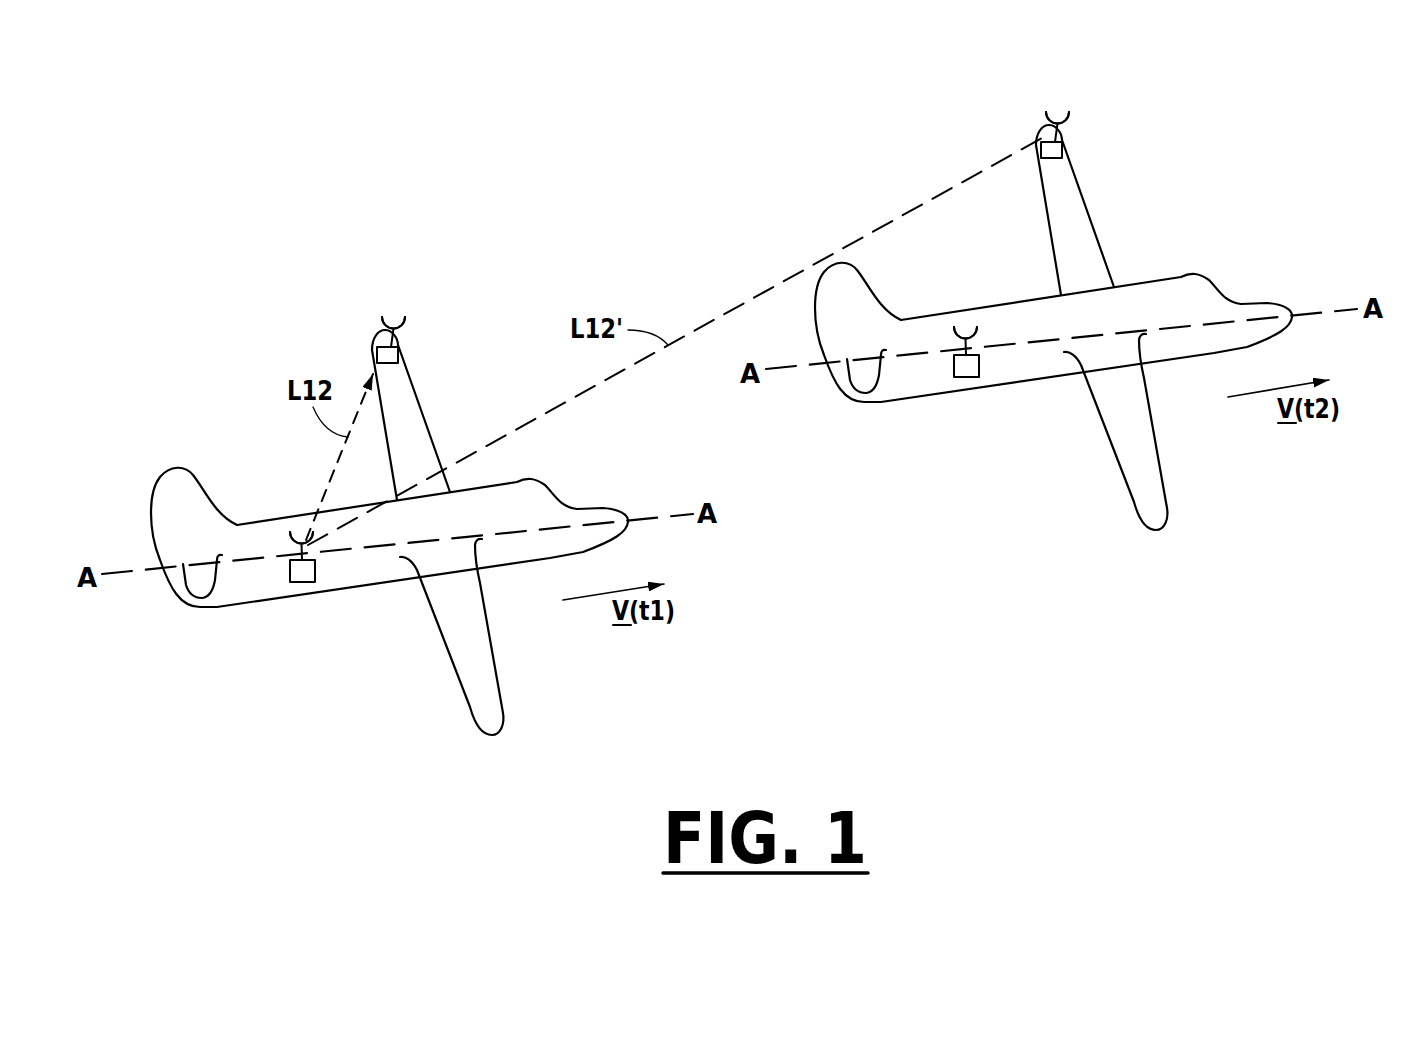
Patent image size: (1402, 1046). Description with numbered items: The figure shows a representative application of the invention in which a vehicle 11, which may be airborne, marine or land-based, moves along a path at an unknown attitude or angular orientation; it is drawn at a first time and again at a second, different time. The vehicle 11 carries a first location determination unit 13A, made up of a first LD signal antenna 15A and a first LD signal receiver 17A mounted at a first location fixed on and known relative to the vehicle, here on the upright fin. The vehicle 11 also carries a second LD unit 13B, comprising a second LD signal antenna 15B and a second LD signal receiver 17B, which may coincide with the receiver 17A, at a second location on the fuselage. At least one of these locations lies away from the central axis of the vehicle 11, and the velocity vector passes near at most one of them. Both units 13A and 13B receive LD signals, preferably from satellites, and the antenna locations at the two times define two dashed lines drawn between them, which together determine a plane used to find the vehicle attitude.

The vehicle 11 is at (235, 585).
The first location determination unit 13A is at (378, 328).
The second location determination unit 13B is at (286, 546).
The first LD signal antenna 15A is at (407, 330).
The second LD signal antenna 15B is at (313, 555).
The first LD signal receiver 17A is at (398, 355).
The second LD signal receiver 17B is at (300, 582).